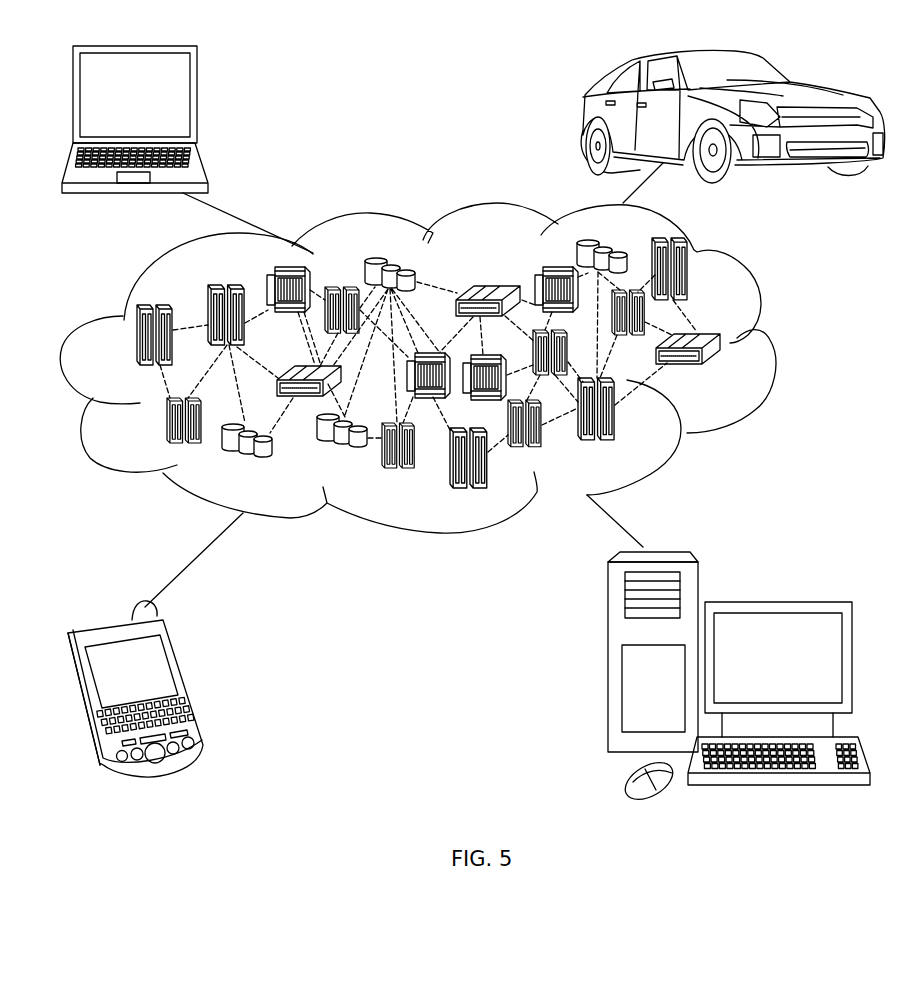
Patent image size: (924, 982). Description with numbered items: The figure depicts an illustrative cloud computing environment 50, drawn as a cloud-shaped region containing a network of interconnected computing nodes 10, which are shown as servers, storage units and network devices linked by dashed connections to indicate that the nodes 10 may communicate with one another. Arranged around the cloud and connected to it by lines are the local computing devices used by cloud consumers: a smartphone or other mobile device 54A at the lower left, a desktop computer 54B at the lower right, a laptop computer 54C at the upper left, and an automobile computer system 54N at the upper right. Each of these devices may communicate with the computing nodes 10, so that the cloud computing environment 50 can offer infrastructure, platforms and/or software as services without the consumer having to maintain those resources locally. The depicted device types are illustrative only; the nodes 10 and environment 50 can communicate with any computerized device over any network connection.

The computing node 10 is at (722, 372).
The cloud computing environment 50 is at (776, 346).
The smartphone or other mobile device 54A is at (190, 683).
The desktop computer 54B is at (775, 602).
The laptop computer 54C is at (197, 101).
The automobile computer system 54N is at (582, 118).